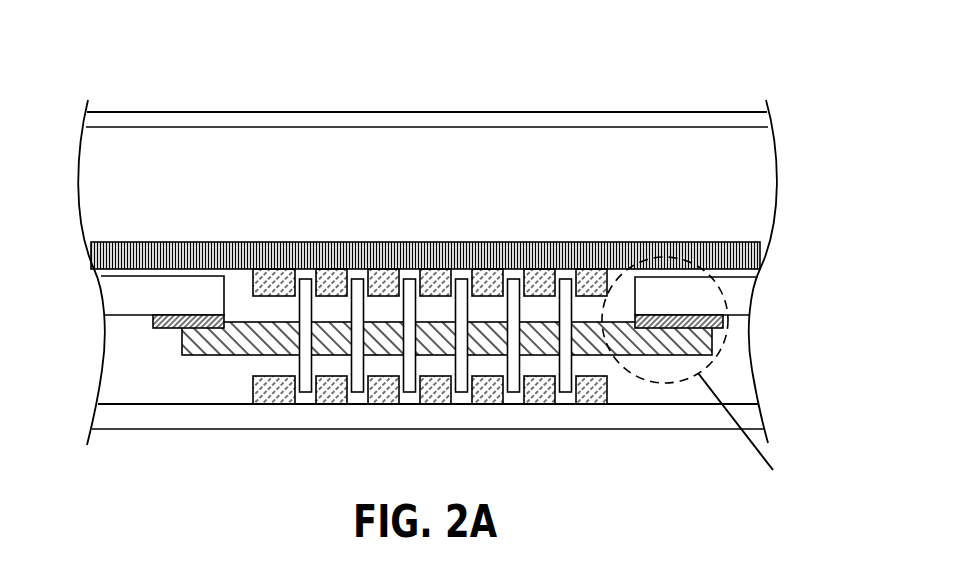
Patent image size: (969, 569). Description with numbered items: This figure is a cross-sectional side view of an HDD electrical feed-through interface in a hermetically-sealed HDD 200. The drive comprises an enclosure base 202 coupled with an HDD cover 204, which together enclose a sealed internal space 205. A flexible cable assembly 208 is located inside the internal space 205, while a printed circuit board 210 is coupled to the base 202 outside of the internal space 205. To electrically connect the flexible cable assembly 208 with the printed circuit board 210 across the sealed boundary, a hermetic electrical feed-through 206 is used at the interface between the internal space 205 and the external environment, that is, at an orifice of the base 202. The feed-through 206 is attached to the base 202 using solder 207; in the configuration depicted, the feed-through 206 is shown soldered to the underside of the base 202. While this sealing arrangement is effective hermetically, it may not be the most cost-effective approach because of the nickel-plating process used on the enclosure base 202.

The hermetically-sealed HDD 200 is at (145, 50).
The enclosure base 202 is at (120, 295).
The HDD cover 204 is at (675, 118).
The internal space 205 is at (749, 173).
The hermetic electrical feed-through 206 is at (697, 345).
The solder 207 is at (150, 320).
The flexible cable assembly 208 is at (185, 253).
The printed circuit board 210 is at (667, 415).